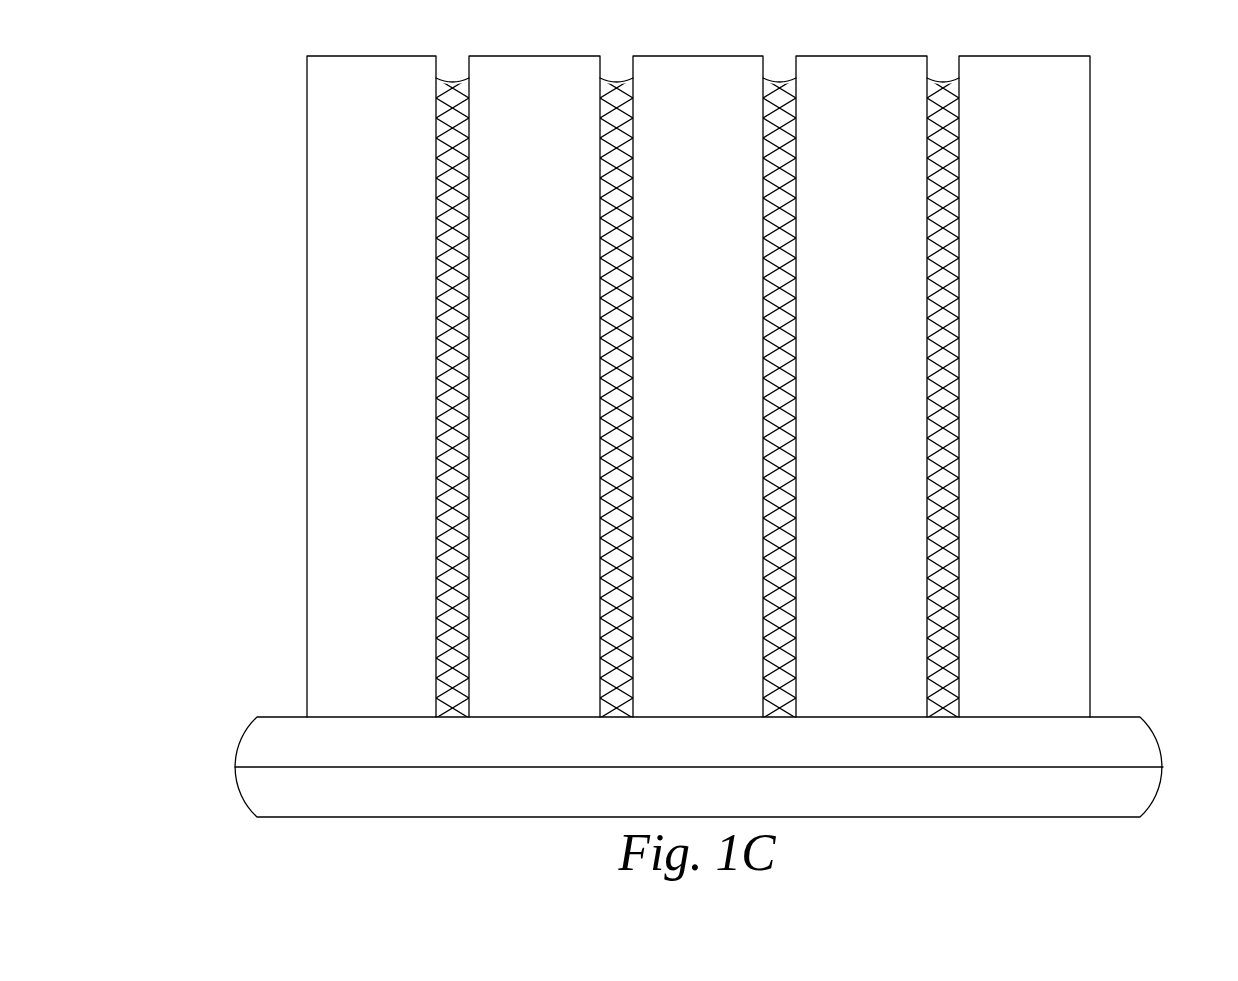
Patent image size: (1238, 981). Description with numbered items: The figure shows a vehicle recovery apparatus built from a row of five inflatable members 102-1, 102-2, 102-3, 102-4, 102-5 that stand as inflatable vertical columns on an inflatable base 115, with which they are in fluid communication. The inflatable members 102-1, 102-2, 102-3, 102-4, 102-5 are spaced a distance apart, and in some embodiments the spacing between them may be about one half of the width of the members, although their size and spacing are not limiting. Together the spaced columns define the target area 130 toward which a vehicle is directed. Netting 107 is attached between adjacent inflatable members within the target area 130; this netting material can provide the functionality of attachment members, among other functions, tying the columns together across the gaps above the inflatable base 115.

The target area 130 is at (237, 248).
The inflatable base 115 is at (1140, 718).
The inflatable member 102-1 is at (368, 60).
The inflatable member 102-2 is at (529, 60).
The inflatable member 102-3 is at (694, 60).
The inflatable member 102-4 is at (857, 60).
The inflatable member 102-5 is at (1022, 60).
The netting 107 is at (452, 79).